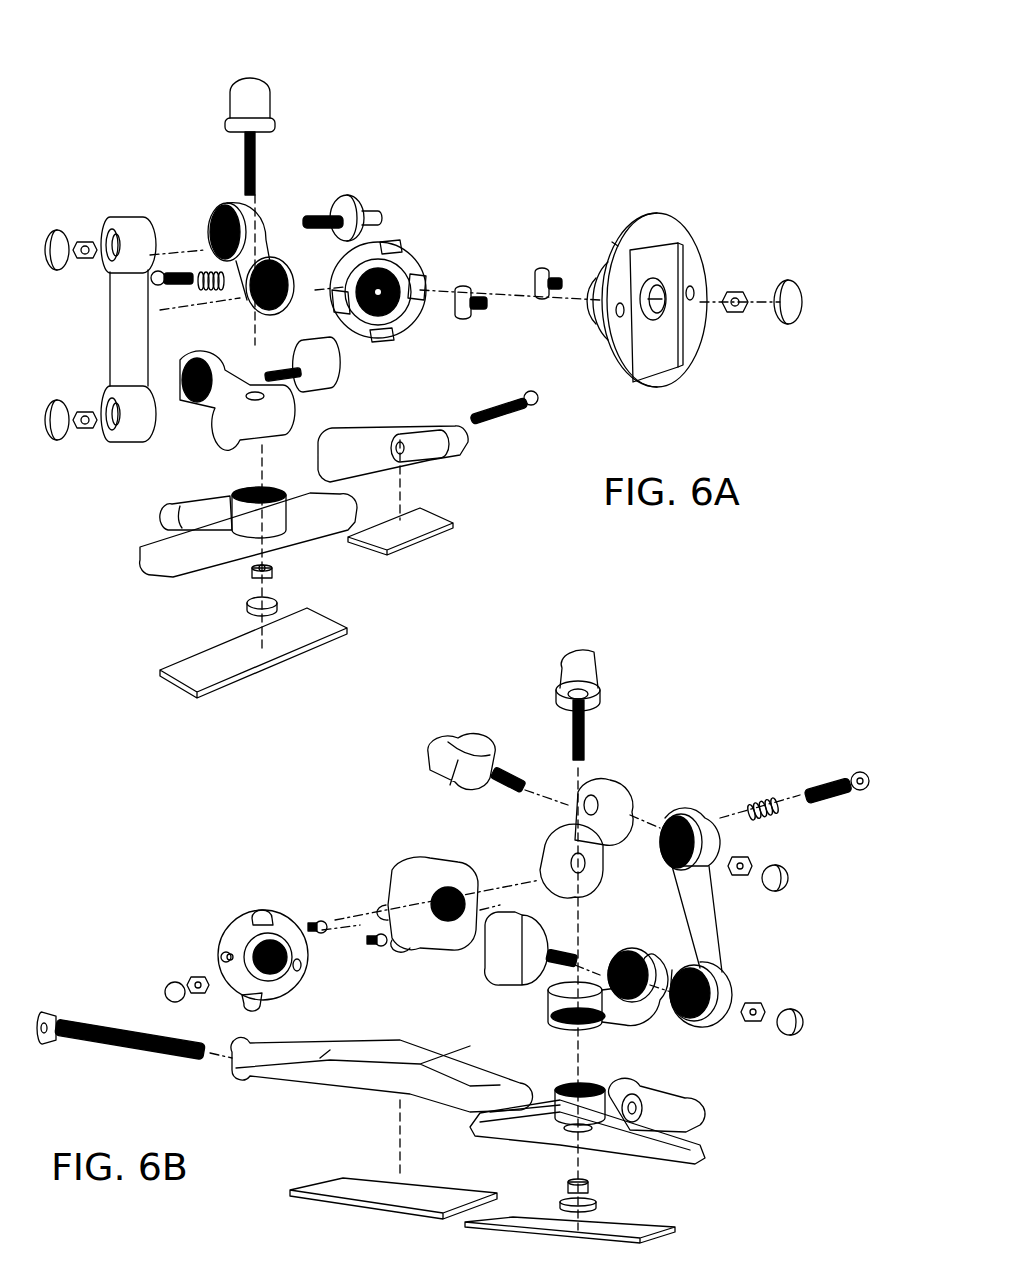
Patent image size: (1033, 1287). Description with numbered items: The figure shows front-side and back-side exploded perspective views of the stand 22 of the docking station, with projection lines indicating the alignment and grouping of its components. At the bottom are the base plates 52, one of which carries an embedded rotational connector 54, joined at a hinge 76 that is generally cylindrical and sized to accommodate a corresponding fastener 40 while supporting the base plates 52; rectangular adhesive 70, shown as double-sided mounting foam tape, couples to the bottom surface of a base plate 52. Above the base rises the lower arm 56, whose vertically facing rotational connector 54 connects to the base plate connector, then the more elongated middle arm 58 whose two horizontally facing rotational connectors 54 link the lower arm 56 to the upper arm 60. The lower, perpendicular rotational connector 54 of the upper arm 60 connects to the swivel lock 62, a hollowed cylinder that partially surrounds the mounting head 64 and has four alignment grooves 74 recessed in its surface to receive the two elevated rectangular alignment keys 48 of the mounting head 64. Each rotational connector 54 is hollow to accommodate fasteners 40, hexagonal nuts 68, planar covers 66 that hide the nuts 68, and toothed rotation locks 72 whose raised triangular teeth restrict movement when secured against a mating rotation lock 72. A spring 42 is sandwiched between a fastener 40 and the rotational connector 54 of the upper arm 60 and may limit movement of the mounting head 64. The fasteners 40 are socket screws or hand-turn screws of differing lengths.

In FIG. 6A, the stand 22 is at (135, 140).
In FIG. 6B, the stand 22 is at (722, 678).
In FIG. 6A, the fastener 40 is at (268, 120).
In FIG. 6B, the fastener 40 is at (566, 673).
In FIG. 6A, the spring 42 is at (208, 293).
In FIG. 6B, the spring 42 is at (758, 797).
In FIG. 6A, the alignment key 48 is at (610, 246).
In FIG. 6B, the alignment key 48 is at (265, 915).
In FIG. 6A, the base plate 52 is at (330, 485).
In FIG. 6B, the base plate 52 is at (468, 1128).
In FIG. 6A, the rotational connector 54 is at (140, 224).
In FIG. 6B, the rotational connector 54 is at (700, 967).
In FIG. 6A, the lower arm 56 is at (238, 376).
In FIG. 6B, the lower arm 56 is at (633, 1020).
In FIG. 6A, the middle arm 58 is at (98, 325).
In FIG. 6B, the middle arm 58 is at (723, 906).
In FIG. 6A, the upper arm 60 is at (224, 265).
In FIG. 6B, the upper arm 60 is at (560, 823).
In FIG. 6A, the swivel lock 62 is at (408, 352).
In FIG. 6B, the swivel lock 62 is at (420, 858).
In FIG. 6A, the mounting head 64 is at (672, 200).
In FIG. 6B, the mounting head 64 is at (212, 922).
In FIG. 6A, the cover 66 is at (55, 238).
In FIG. 6B, the cover 66 is at (165, 988).
In FIG. 6A, the nut 68 is at (85, 240).
In FIG. 6B, the nut 68 is at (192, 977).
In FIG. 6A, the adhesive 70 is at (402, 542).
In FIG. 6B, the adhesive 70 is at (470, 1225).
In FIG. 6A, the rotation lock 72 is at (220, 215).
In FIG. 6B, the rotation lock 72 is at (677, 820).
In FIG. 6A, the alignment groove 74 is at (398, 246).
In FIG. 6B, the alignment groove 74 is at (396, 944).
In FIG. 6A, the hinge 76 is at (185, 515).
In FIG. 6B, the hinge 76 is at (296, 1046).